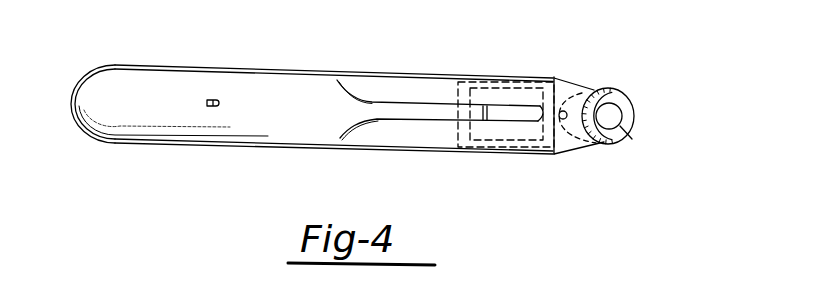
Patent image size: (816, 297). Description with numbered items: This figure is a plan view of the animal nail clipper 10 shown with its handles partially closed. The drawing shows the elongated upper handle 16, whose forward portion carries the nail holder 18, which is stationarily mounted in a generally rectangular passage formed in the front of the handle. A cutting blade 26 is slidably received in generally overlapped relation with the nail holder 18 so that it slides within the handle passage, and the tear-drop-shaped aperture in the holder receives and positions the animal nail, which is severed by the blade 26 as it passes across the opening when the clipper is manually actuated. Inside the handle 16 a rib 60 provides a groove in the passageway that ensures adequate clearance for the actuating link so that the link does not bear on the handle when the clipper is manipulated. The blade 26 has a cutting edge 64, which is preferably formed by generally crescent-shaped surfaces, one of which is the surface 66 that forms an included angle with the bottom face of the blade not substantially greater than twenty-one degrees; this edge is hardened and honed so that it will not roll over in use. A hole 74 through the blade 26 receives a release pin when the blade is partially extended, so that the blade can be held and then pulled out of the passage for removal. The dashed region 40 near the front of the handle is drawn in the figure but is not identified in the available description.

The animal nail clipper 10 is at (324, 52).
The upper handle 16 is at (215, 69).
The nail holder 18 is at (636, 120).
The cutting blade 26 is at (597, 88).
The mounting block 40 is at (482, 118).
The rib 60 is at (427, 115).
The cutting edge 64 is at (627, 133).
The crescent shaped surface 66 is at (612, 112).
The hole 74 is at (567, 112).